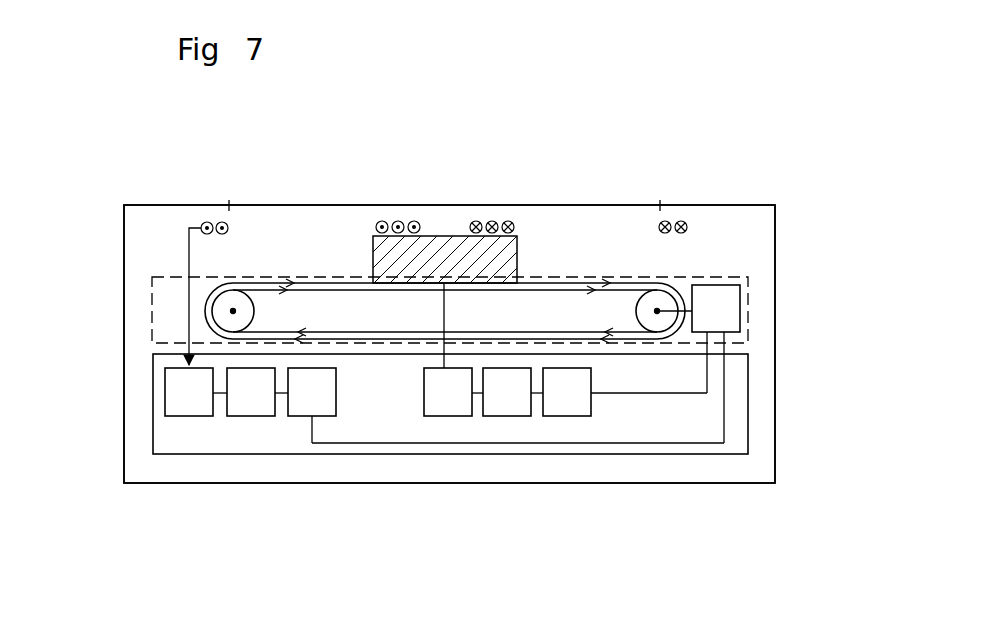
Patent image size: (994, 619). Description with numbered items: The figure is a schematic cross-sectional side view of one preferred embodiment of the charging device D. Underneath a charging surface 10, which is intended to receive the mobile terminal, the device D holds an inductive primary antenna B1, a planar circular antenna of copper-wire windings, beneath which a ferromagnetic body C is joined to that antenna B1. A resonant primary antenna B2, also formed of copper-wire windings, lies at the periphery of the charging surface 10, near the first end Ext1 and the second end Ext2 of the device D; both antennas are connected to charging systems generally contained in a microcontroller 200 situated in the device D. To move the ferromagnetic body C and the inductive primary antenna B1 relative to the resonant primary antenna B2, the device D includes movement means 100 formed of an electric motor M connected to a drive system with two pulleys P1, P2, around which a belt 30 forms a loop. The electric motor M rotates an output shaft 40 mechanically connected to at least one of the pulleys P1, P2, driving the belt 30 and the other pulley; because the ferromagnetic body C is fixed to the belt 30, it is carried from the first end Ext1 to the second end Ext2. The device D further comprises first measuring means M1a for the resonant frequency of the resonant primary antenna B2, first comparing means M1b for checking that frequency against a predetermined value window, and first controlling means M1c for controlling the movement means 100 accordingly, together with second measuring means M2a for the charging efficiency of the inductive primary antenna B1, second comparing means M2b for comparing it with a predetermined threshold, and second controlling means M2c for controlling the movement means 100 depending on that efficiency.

The charging device D is at (94, 232).
The charging surface 10 is at (301, 200).
The movement means 100 is at (748, 318).
The microcontroller 200 is at (748, 382).
The belt 30 is at (650, 280).
The first pulley P1 is at (232, 312).
The second pulley P2 is at (658, 310).
The electric motor M is at (731, 304).
The output shaft 40 is at (688, 308).
The ferromagnetic body C is at (526, 238).
The inductive primary antenna B1 is at (411, 207).
The resonant primary antenna B2 is at (208, 216).
The first end Ext1 is at (241, 194).
The second end Ext2 is at (638, 194).
The first measuring means M1a is at (188, 416).
The first comparing means M1b is at (248, 416).
The first controlling means M1c is at (300, 416).
The second measuring means M2a is at (443, 416).
The second comparing means M2b is at (505, 416).
The second controlling means M2c is at (555, 416).